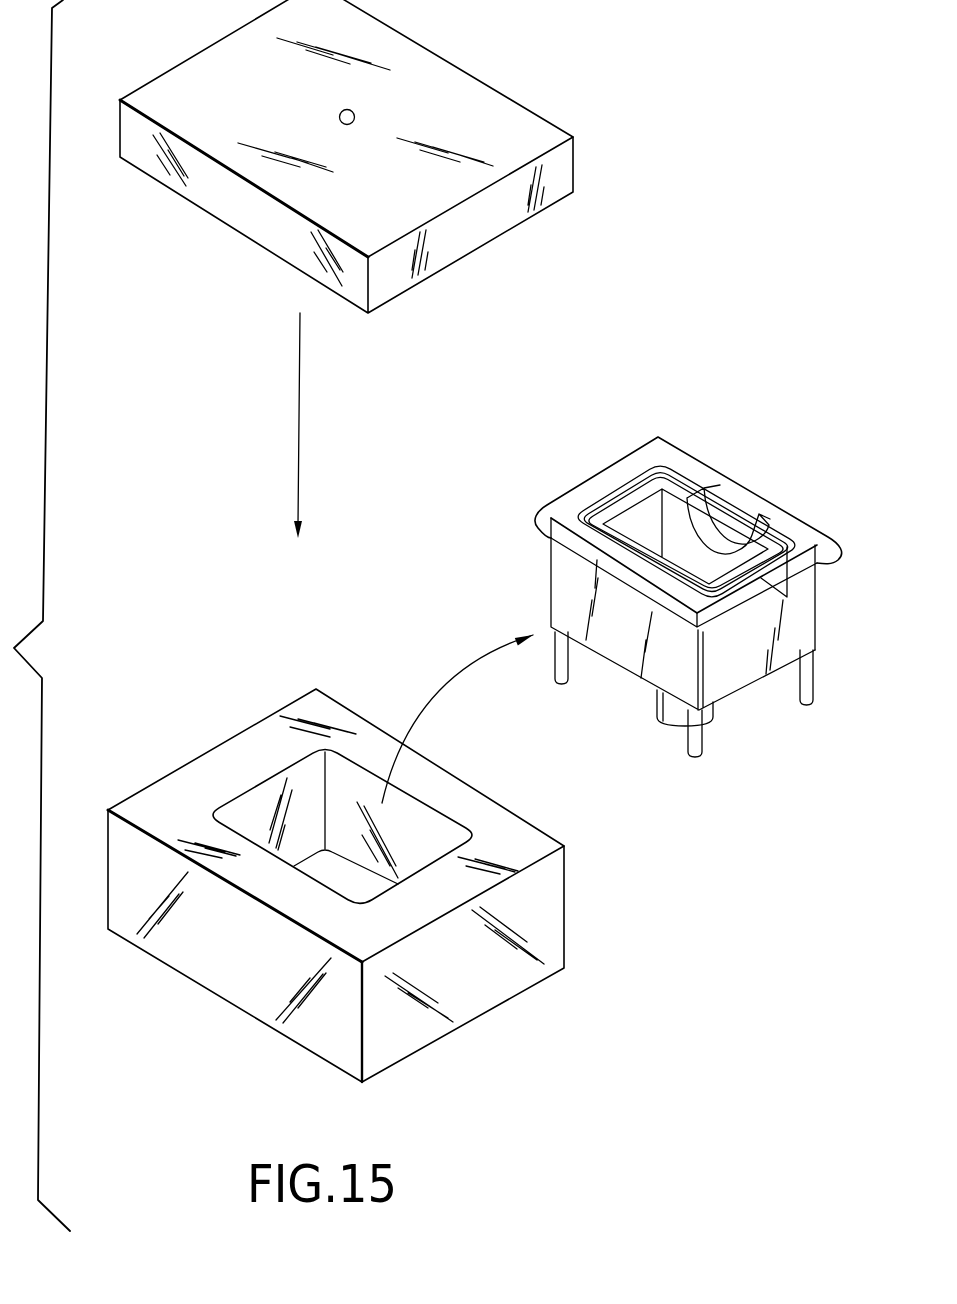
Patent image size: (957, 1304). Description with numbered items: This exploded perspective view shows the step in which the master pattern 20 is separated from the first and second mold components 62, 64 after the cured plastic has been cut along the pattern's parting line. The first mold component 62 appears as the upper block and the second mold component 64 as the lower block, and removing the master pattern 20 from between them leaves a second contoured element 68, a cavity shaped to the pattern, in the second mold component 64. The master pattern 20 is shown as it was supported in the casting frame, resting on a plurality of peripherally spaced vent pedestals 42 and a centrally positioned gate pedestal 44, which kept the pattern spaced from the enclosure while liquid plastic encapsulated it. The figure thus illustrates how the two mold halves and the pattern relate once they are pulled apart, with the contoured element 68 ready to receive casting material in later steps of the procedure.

The master pattern 20 is at (701, 558).
The vent pedestals 42 is at (818, 687).
The gate pedestal 44 is at (672, 715).
The first mold component 62 is at (500, 113).
The second mold component 64 is at (189, 782).
The second contoured element 68 is at (353, 778).